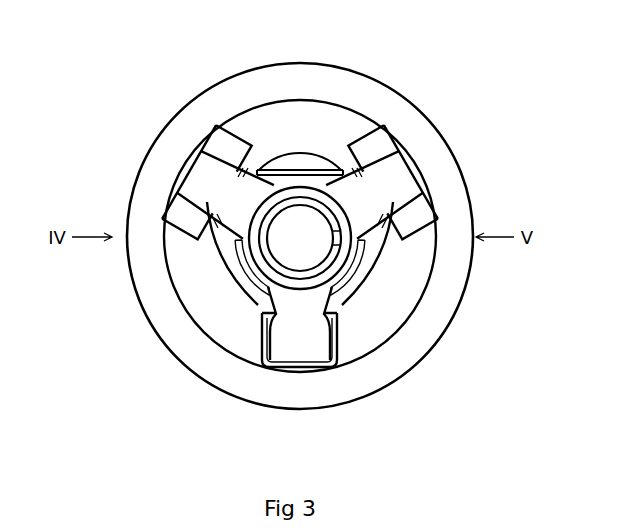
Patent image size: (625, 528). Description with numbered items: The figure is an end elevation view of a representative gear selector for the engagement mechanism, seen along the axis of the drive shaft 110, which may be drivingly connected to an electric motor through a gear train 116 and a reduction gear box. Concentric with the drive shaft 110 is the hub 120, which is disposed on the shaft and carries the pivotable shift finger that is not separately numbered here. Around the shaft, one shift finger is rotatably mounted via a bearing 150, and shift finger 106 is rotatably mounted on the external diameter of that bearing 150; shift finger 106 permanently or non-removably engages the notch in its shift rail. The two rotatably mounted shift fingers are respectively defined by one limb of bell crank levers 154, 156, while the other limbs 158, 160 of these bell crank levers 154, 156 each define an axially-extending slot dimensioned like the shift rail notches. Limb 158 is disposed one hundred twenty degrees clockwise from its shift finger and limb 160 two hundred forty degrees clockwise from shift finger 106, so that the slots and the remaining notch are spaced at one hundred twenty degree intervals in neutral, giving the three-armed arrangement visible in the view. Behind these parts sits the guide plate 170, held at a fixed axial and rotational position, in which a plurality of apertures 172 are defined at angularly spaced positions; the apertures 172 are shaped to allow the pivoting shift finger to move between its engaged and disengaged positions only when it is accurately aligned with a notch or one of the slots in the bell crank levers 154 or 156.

The shift finger 106 is at (292, 348).
The drive shaft 110 is at (302, 225).
The gear train 116 is at (178, 358).
The hub 120 is at (282, 162).
The bearing 150 is at (348, 282).
The bell crank lever 154 is at (352, 232).
The bell crank lever 156 is at (222, 228).
The limb 158 is at (398, 168).
The limb 160 is at (202, 175).
The guide plate 170 is at (214, 262).
The apertures 172 is at (337, 322).